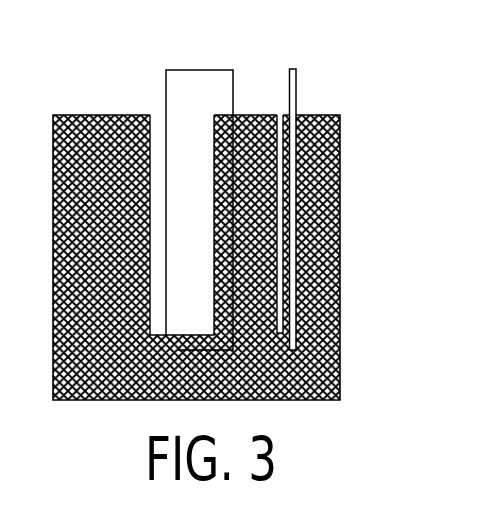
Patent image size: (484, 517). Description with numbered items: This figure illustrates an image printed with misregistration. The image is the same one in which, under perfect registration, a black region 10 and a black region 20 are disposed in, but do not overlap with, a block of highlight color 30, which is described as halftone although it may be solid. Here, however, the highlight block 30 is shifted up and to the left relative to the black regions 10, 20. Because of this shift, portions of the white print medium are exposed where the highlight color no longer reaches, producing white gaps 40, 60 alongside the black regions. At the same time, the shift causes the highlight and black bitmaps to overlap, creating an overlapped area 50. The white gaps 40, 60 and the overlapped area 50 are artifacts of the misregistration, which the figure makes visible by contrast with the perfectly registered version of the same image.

The black region 10 is at (200, 70).
The black region 20 is at (296, 82).
The block of highlight color 30 is at (340, 345).
The white gap 40 is at (150, 146).
The overlapped area 50 is at (228, 125).
The white gap 60 is at (340, 148).